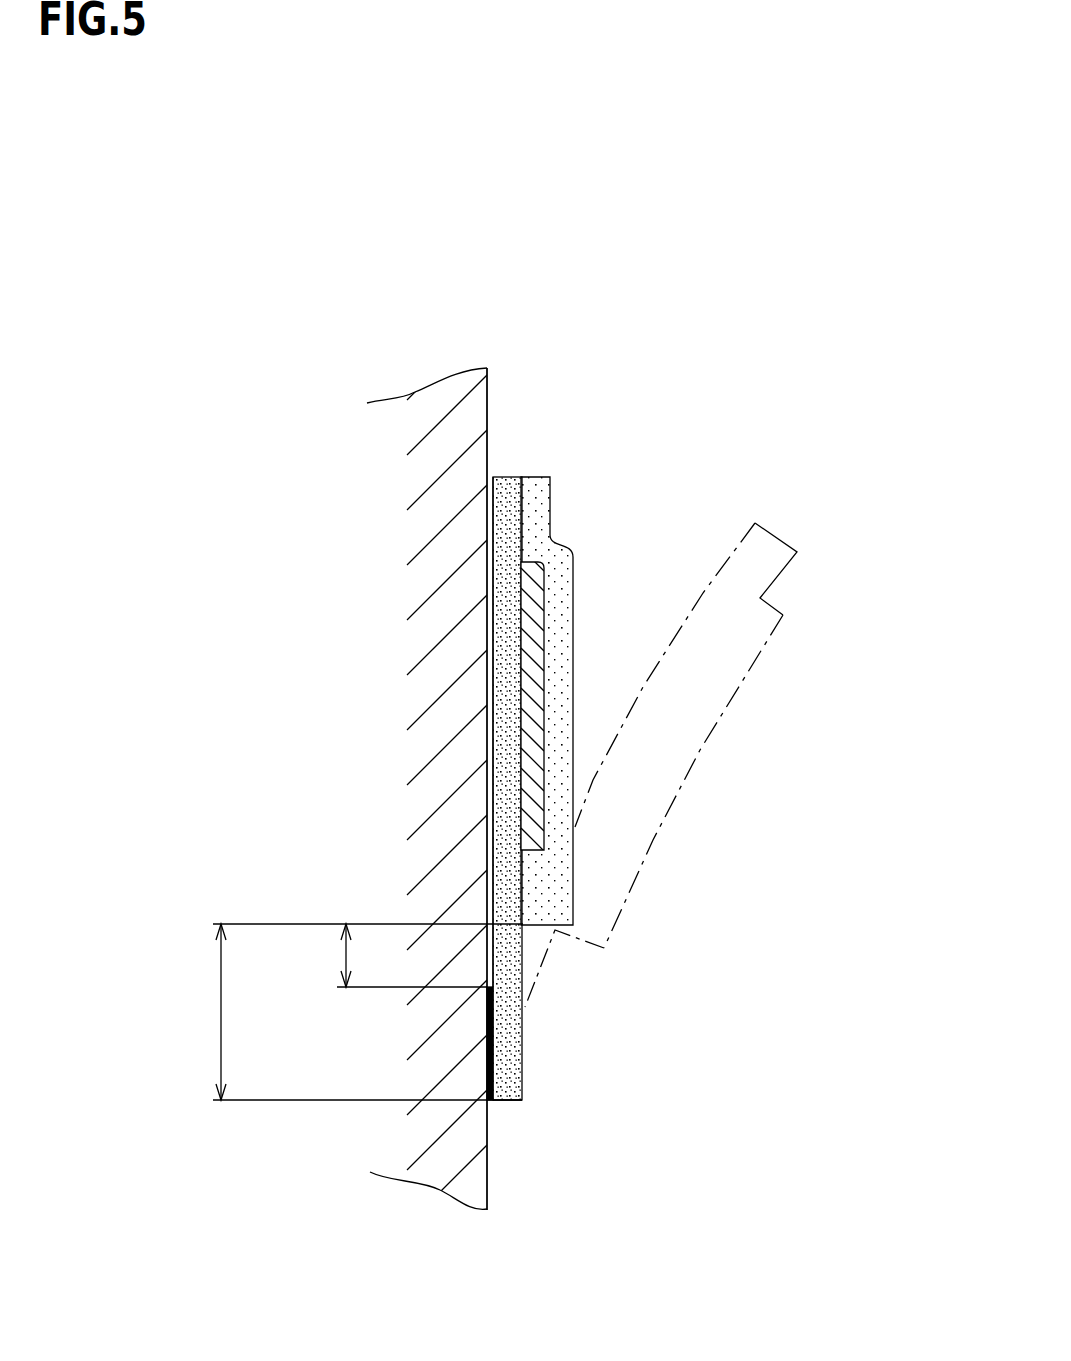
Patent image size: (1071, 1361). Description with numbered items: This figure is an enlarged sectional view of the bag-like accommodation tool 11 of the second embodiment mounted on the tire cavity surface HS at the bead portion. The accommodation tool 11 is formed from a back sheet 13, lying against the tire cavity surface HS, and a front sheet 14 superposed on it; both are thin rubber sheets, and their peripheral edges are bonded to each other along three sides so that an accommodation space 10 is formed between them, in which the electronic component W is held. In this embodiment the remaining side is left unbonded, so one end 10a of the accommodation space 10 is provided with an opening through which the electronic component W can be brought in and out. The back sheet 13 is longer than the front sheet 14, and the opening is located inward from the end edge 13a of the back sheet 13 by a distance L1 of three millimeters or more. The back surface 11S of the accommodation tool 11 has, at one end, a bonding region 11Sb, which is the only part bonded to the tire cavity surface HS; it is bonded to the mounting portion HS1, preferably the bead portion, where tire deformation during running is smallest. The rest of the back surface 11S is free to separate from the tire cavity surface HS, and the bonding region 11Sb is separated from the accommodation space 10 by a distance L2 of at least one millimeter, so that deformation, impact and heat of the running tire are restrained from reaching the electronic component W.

The accommodation space 10 is at (546, 870).
The one end of the accommodation space 10a is at (533, 932).
The accommodation tool 11 is at (585, 432).
The back surface 11S is at (493, 686).
The bonding region 11Sb is at (347, 988).
The back sheet 13 is at (523, 487).
The end edge 13a is at (512, 1100).
The front sheet 14 is at (553, 505).
The electronic component W is at (532, 720).
The tire cavity surface HS is at (487, 405).
The mounting portion HS1 is at (487, 1067).
The distance L1 is at (353, 1012).
The distance L2 is at (395, 955).